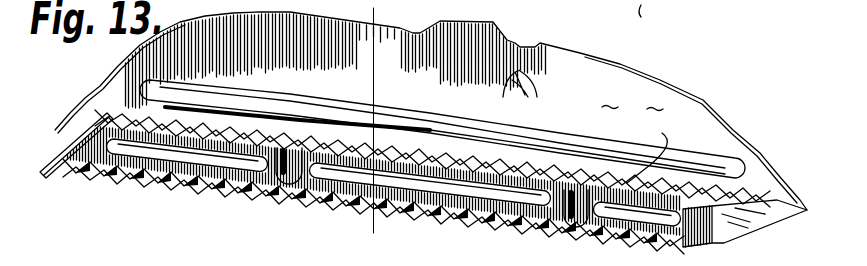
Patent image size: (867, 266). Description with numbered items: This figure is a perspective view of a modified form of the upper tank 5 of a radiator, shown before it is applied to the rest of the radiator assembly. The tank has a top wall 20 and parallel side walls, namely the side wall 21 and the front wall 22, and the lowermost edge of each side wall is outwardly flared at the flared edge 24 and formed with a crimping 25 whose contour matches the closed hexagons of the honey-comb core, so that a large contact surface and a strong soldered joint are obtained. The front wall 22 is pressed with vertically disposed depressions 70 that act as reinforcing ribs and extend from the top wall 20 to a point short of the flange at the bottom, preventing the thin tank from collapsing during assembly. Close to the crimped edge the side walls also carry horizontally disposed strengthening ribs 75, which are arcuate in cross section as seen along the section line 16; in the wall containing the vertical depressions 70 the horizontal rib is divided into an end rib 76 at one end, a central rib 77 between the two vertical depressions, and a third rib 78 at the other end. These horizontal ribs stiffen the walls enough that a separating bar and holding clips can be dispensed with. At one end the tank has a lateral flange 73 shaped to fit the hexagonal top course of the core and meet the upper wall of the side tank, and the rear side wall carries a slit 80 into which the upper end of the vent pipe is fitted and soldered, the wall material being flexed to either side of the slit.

The upper tank 5 is at (694, 99).
The section line 16- 16 is at (362, 240).
The top wall 20 is at (738, 218).
The side wall 21 is at (633, 60).
The front wall 22 is at (647, 240).
The outwardly flared edge 24 is at (622, 91).
The crimping 25 is at (407, 131).
The vertical depression 70 is at (282, 203).
The lateral flange 73 is at (70, 145).
The horizontal strengthening rib 75 is at (549, 130).
The end rib 76 is at (187, 190).
The central rib 77 is at (464, 229).
The third rib 78 is at (607, 237).
The slit 80 is at (520, 95).